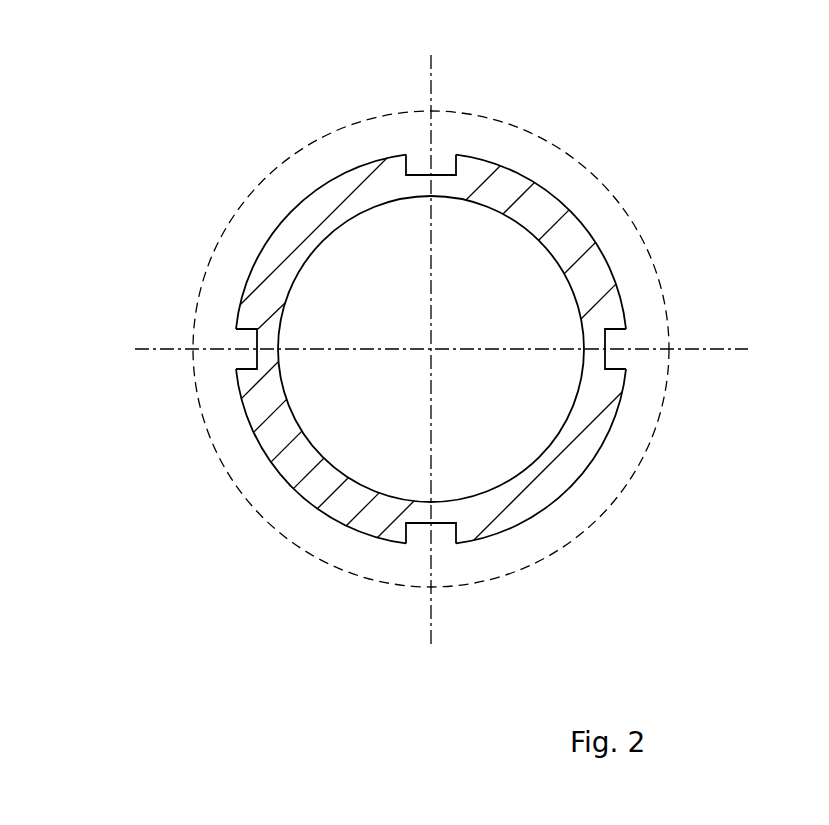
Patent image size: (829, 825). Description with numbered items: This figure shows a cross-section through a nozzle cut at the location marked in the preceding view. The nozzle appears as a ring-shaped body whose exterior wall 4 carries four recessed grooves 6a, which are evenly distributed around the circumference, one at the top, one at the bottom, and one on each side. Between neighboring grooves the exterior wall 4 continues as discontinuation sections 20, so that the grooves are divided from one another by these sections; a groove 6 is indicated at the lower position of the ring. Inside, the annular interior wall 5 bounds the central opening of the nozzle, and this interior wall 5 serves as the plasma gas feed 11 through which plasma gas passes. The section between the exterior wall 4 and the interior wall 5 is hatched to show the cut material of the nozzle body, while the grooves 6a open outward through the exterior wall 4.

The exterior wall 4 is at (522, 172).
The annular interior wall 5 is at (518, 225).
The groove 6 is at (458, 505).
The recessed groove 6a is at (584, 362).
The plasma gas feed 11 is at (331, 290).
The discontinuation section 20 is at (298, 213).